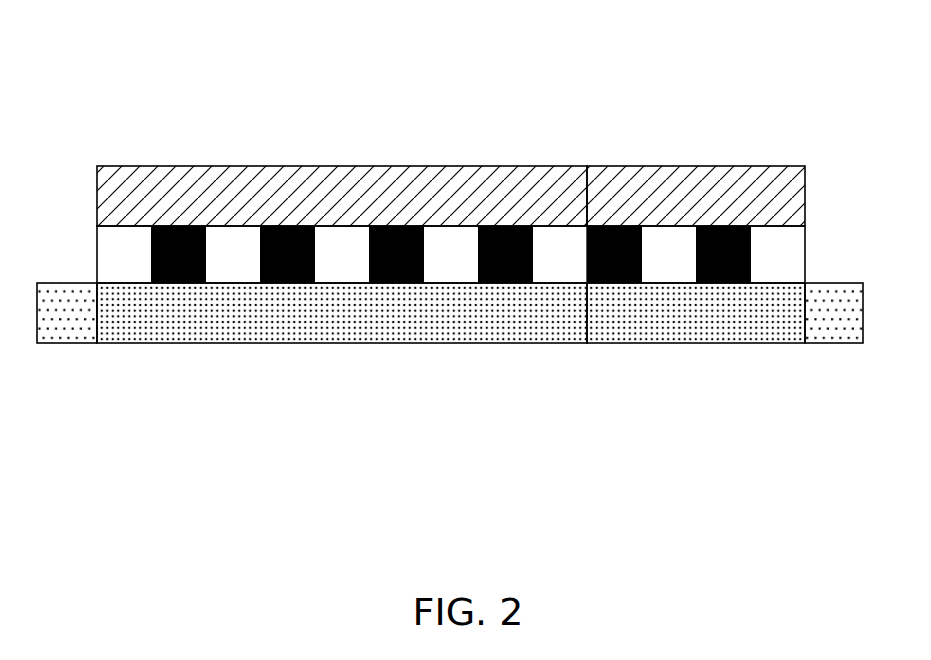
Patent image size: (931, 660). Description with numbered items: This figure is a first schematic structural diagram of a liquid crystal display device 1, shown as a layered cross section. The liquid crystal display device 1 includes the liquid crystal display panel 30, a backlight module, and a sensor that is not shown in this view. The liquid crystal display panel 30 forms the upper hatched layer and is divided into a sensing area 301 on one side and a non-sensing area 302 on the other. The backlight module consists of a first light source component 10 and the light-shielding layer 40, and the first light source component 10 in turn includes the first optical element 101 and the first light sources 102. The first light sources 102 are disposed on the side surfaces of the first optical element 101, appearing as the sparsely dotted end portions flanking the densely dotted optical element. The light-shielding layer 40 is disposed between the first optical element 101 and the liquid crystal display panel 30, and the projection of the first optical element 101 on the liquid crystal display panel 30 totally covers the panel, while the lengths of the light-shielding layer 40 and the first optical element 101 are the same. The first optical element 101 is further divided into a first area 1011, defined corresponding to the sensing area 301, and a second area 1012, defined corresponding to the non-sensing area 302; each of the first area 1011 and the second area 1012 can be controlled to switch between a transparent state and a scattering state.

The liquid crystal display device 1 is at (440, 72).
The first light source component 10 is at (682, 462).
The first optical element 101 is at (590, 397).
The first area 1011 is at (735, 322).
The second area 1012 is at (547, 322).
The first light sources 102 is at (835, 325).
The liquid crystal display panel 30 is at (565, 117).
The sensing area 301 is at (668, 192).
The non-sensing area 302 is at (537, 190).
The light-shielding layer 40 is at (780, 265).